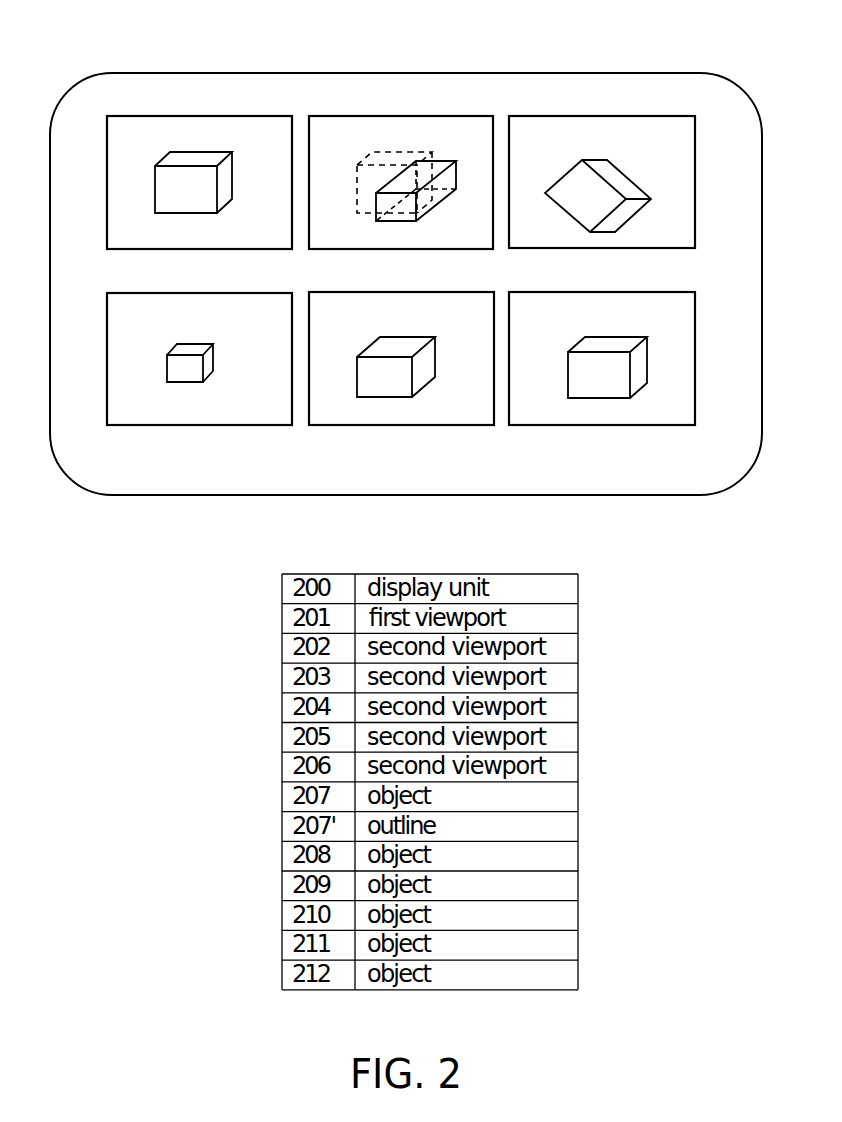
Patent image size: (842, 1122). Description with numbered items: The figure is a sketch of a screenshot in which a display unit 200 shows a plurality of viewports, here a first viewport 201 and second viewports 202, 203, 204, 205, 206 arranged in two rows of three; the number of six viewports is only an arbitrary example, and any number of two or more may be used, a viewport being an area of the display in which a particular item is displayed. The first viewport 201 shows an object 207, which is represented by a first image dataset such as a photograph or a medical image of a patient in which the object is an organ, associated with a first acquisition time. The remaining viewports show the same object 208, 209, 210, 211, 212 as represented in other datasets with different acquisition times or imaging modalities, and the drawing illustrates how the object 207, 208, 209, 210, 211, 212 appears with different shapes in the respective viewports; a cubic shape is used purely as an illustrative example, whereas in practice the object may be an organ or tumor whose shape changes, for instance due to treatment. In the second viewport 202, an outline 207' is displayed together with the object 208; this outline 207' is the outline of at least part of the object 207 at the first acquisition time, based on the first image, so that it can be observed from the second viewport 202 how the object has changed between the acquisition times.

The display unit 200 is at (407, 72).
The first viewport 201 is at (199, 113).
The second viewport 202 is at (394, 112).
The second viewport 203 is at (606, 121).
The second viewport 204 is at (213, 288).
The second viewport 205 is at (413, 289).
The second viewport 206 is at (617, 289).
The object 207 is at (182, 169).
The outline 207' is at (375, 178).
The object 208 is at (455, 167).
The object 209 is at (563, 170).
The object 210 is at (171, 347).
The object 211 is at (362, 350).
The object 212 is at (574, 342).